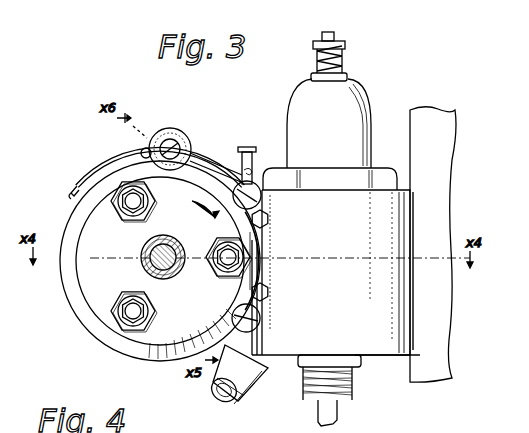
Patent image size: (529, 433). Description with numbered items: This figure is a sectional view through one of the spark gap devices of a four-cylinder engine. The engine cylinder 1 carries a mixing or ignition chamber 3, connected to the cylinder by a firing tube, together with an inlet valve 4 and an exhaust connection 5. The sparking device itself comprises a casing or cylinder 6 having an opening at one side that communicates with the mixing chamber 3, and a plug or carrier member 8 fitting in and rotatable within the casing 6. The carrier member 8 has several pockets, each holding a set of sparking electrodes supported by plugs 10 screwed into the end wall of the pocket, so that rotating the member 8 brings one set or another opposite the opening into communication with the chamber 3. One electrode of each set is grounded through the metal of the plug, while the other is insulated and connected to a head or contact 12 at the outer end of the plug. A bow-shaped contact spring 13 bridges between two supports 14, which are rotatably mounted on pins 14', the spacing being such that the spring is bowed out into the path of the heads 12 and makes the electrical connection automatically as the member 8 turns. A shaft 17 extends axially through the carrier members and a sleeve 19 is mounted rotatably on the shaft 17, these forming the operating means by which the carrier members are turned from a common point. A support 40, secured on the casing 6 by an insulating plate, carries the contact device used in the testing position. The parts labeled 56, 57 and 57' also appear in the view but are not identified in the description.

The cylinder 1 is at (433, 244).
The mixing or ignition chamber 3 is at (336, 261).
The inlet valve 4 is at (329, 100).
The exhaust connection 5 is at (254, 386).
The casing or cylinder 6 is at (72, 297).
The plug or carrier member 8 is at (163, 274).
The plug 10 is at (124, 218).
The head or contact 12 is at (150, 197).
The contact spring 13 is at (265, 279).
The support 14 is at (269, 250).
The pin 14' is at (269, 310).
The shaft 17 is at (165, 236).
The sleeve 19 is at (143, 262).
The support 40 is at (198, 156).
The band 56 is at (94, 174).
The lever 57 is at (229, 146).
The ring 57' is at (166, 136).